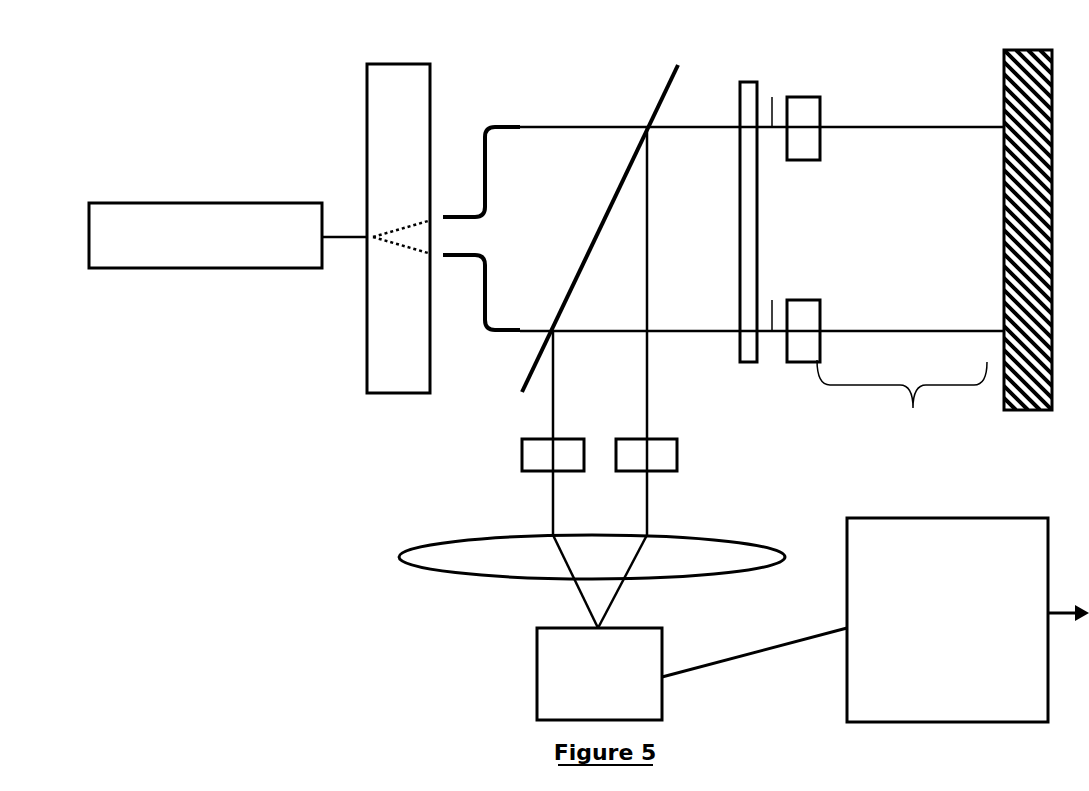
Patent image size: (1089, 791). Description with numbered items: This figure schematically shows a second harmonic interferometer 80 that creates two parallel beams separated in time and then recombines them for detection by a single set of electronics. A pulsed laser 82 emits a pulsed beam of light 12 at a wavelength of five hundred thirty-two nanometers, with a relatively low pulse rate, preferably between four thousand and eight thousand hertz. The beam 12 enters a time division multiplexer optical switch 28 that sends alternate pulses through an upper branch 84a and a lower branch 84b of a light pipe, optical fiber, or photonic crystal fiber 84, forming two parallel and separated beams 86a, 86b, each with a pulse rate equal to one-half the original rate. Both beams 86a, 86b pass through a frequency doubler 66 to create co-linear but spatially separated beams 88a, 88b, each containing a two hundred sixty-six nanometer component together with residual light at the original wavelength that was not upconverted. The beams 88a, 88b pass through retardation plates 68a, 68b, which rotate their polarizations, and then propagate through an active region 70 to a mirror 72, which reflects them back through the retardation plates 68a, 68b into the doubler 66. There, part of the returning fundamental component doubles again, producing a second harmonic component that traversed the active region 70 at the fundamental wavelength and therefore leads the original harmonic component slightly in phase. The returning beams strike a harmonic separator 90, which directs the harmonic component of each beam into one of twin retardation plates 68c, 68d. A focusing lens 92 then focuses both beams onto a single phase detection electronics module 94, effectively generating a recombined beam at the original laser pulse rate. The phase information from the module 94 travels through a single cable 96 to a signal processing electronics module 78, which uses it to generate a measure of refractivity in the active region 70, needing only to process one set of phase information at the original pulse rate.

The second harmonic interferometer 80 is at (222, 52).
The pulsed laser 82 is at (205, 235).
The pulsed beam of light 12 is at (352, 239).
The time division multiplexer optical switch 28 is at (398, 228).
The photonic crystal fiber 84 is at (486, 194).
The upper branch 84a is at (479, 172).
The lower branch 84b is at (479, 292).
The first parallel beam 86a is at (573, 122).
The second parallel beam 86b is at (533, 327).
The harmonic separator 90 is at (600, 233).
The frequency doubler 66 is at (749, 195).
The first co-linear beam 88a is at (788, 93).
The second co-linear beam 88b is at (788, 296).
The first retardation plate 68a is at (822, 110).
The second retardation plate 68b is at (820, 300).
The third retardation plate 68c is at (520, 455).
The fourth retardation plate 68d is at (677, 440).
The mirror 72 is at (866, 210).
The active region 70 is at (902, 403).
The focusing lens 92 is at (592, 581).
The phase detection electronics module 94 is at (599, 674).
The cable 96 is at (757, 655).
The signal processing electronics module 78 is at (968, 620).